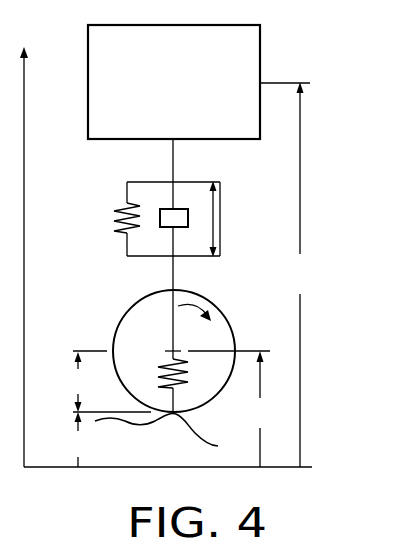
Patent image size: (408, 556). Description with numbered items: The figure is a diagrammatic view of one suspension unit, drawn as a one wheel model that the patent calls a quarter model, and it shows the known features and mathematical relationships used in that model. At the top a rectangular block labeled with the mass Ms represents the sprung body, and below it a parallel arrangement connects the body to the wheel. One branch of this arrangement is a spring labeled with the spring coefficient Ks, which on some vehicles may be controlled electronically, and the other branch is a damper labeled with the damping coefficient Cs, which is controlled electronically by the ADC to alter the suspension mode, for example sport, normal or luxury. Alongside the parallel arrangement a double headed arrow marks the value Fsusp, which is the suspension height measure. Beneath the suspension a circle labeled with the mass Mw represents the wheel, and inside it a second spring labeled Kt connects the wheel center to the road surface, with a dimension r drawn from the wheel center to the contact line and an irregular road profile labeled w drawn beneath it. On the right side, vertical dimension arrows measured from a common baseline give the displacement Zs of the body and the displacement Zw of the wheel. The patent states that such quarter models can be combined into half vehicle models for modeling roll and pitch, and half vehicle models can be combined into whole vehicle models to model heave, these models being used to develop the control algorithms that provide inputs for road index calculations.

The sprung mass Ms is at (174, 82).
The spring coefficient Ks is at (113, 219).
The damping coefficient Cs is at (166, 234).
The suspension height measure Fsusp is at (217, 219).
The sprung mass displacement Zs is at (301, 274).
The wheel (unsprung) mass Mw is at (174, 351).
The tire stiffness Kt is at (185, 374).
The wheel displacement Zw is at (264, 409).
The wheel radius r is at (79, 382).
The road profile input w is at (144, 439).